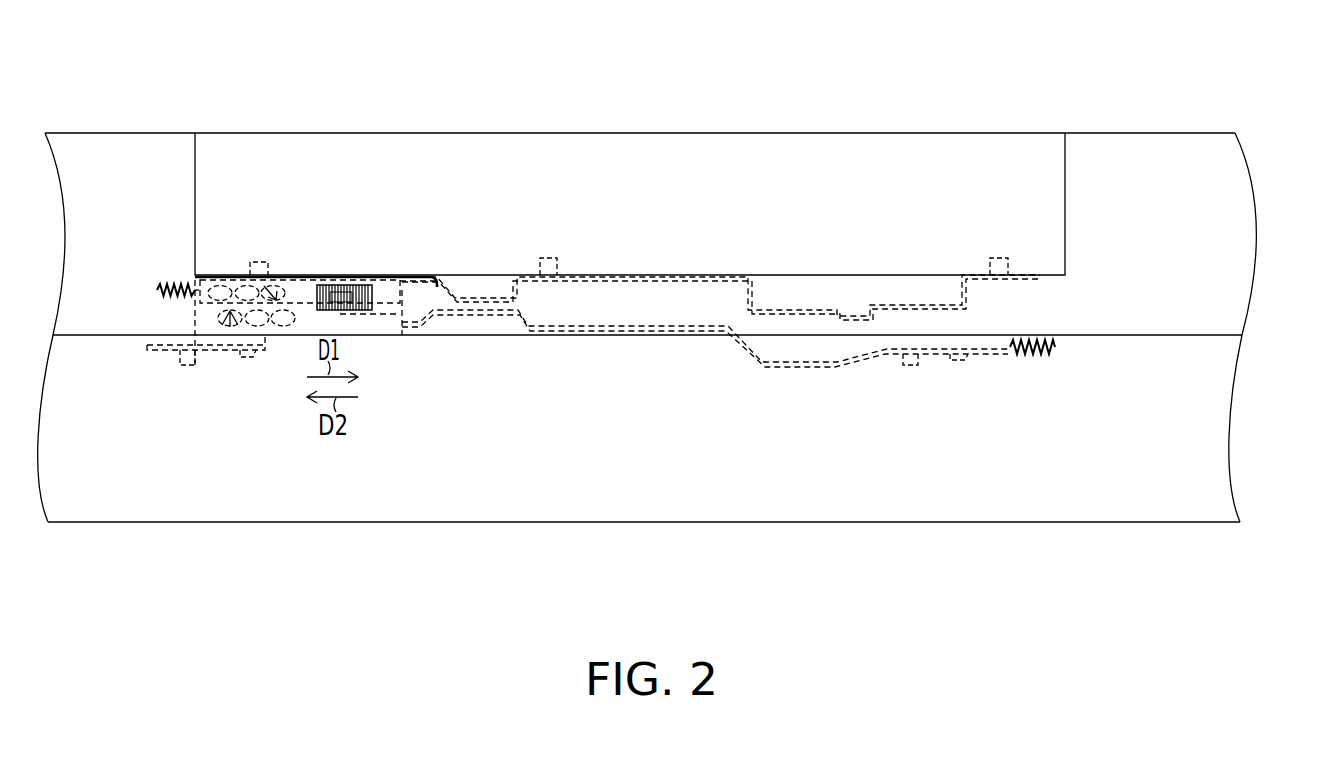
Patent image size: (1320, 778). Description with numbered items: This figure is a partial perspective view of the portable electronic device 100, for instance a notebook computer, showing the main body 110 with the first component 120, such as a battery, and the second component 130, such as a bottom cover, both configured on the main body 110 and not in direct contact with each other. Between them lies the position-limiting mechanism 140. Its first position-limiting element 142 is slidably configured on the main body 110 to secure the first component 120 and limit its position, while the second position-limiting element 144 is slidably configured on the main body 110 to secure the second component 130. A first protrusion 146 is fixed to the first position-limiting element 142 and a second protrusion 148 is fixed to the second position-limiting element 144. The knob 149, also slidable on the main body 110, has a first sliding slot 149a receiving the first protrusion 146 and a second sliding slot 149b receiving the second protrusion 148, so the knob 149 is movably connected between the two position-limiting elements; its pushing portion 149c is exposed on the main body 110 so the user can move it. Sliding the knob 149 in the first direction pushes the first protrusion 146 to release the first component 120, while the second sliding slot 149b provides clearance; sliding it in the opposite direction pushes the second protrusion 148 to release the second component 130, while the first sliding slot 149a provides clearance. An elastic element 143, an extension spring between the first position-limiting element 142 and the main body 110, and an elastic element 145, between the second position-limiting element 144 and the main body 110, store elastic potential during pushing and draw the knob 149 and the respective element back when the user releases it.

The portable electronic device 100 is at (670, 370).
The main body 110 is at (1233, 245).
The first component 120 is at (697, 200).
The second component 130 is at (1224, 393).
The position-limiting mechanism 140 is at (318, 268).
The first position-limiting element 142 is at (900, 305).
The elastic element 143 is at (178, 283).
The second position-limiting element 144 is at (812, 365).
The elastic element 145 is at (1050, 358).
The first protrusion 146 is at (220, 283).
The second protrusion 148 is at (282, 335).
The knob 149 is at (395, 295).
The first sliding slot 149a is at (282, 296).
The second sliding slot 149b is at (230, 335).
The pushing portion 149c is at (357, 292).